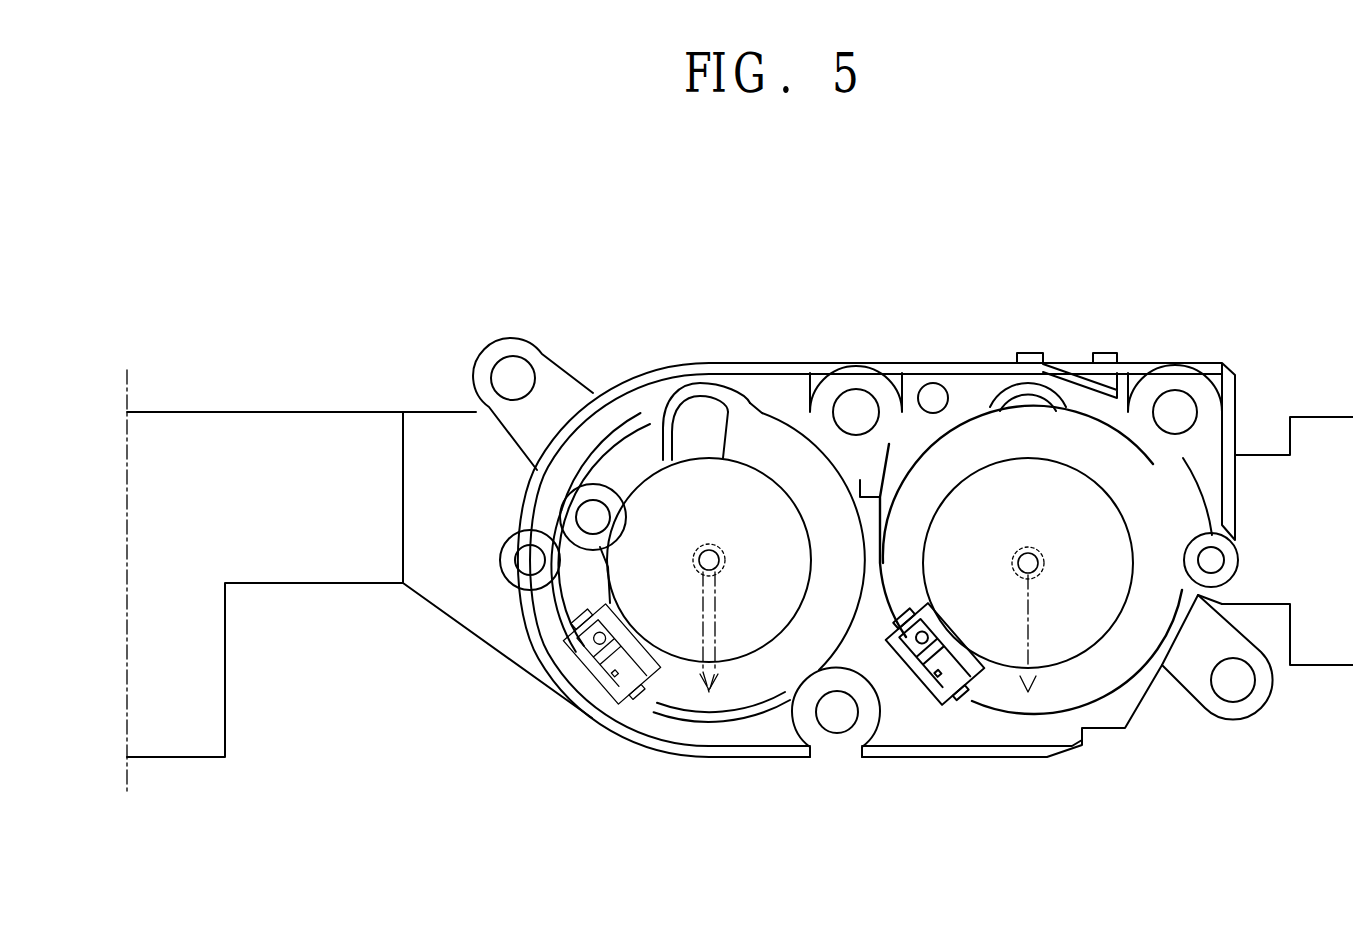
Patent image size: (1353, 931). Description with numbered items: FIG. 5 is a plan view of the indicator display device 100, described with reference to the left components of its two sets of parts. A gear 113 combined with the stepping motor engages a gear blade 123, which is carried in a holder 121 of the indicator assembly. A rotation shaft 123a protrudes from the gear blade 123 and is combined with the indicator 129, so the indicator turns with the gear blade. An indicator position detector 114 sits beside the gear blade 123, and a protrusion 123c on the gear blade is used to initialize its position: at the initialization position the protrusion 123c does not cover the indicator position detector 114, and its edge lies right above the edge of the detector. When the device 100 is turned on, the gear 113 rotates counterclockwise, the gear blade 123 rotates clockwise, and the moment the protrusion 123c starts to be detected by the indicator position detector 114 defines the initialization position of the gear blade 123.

The indicator display device 100 is at (483, 263).
The gear 113 is at (705, 408).
The indicator position detector 114 is at (610, 683).
The holder 121 is at (974, 392).
The gear blade 123 is at (778, 416).
The rotation shaft 123a is at (703, 548).
The protrusion 123c is at (753, 683).
The indicator 129 is at (714, 683).